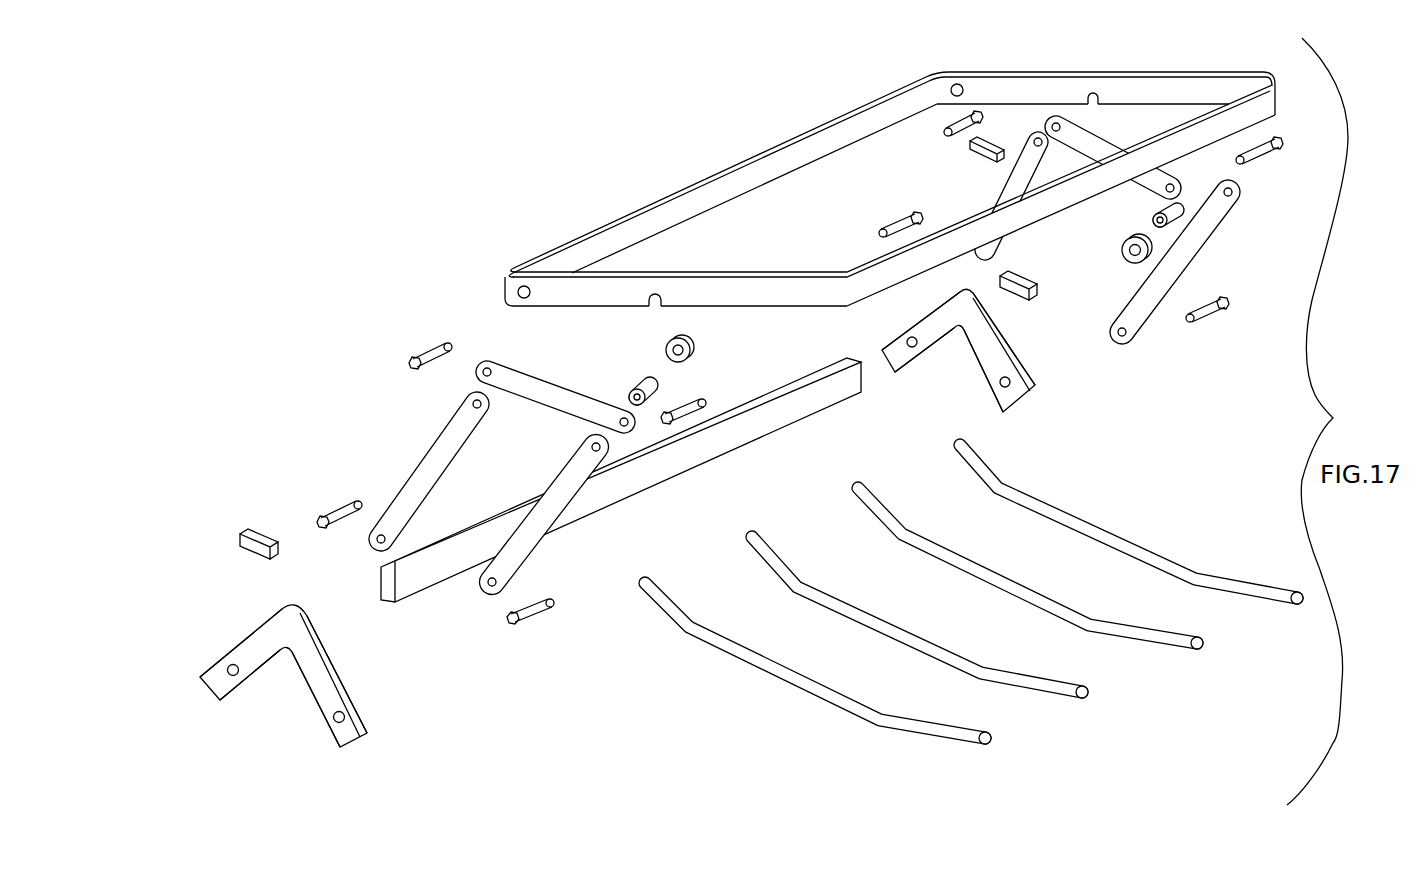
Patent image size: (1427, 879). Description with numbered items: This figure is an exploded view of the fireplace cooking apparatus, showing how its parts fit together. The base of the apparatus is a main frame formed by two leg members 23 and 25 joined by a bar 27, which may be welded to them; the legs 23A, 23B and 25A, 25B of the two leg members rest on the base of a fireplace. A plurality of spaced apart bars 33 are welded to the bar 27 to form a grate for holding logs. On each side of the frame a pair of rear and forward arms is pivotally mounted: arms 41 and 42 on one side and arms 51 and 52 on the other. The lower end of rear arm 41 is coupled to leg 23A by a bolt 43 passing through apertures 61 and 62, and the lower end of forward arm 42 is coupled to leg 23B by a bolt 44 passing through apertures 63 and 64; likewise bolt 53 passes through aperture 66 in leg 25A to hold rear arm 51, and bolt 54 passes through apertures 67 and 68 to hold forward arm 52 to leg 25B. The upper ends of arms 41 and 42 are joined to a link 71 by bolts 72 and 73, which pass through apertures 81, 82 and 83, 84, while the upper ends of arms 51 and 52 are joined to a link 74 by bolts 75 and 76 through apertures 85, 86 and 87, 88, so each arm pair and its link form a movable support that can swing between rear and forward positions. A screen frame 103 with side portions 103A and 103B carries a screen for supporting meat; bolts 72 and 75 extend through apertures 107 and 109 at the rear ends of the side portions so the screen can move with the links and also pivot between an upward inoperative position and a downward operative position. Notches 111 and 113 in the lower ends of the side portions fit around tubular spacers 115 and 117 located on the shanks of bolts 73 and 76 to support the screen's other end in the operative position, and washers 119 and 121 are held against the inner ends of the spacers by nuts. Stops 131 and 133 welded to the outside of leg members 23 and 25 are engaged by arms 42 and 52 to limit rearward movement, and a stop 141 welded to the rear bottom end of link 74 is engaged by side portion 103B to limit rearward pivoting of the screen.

The leg member 23 is at (298, 606).
The leg 23A is at (258, 627).
The leg 23B is at (348, 676).
The leg member 25 is at (1008, 307).
The leg 25A is at (915, 362).
The leg 25B is at (1038, 382).
The bar 27 is at (745, 446).
The bars 33 is at (1030, 500).
The rear arm 41 is at (432, 441).
The forward arm 42 is at (563, 477).
The bolt 43 is at (348, 502).
The bolt 44 is at (544, 593).
The rear arm 51 is at (995, 196).
The forward arm 52 is at (1215, 240).
The bolt 53 is at (887, 226).
The bolt 54 is at (1212, 310).
The aperture 61 is at (372, 540).
The aperture 62 is at (235, 677).
The aperture 63 is at (485, 590).
The aperture 64 is at (335, 723).
The aperture 66 is at (906, 338).
The aperture 67 is at (1128, 337).
The aperture 68 is at (1000, 387).
The link 71 is at (528, 375).
The bolt 72 is at (430, 340).
The bolt 73 is at (705, 400).
The link 74 is at (1078, 152).
The bolt 75 is at (946, 136).
The bolt 76 is at (1278, 158).
The aperture 81 is at (466, 403).
The aperture 82 is at (489, 366).
The aperture 83 is at (585, 446).
The aperture 84 is at (626, 430).
The aperture 85 is at (1057, 118).
The aperture 86 is at (1034, 138).
The aperture 87 is at (1239, 195).
The aperture 88 is at (1178, 184).
The screen frame 103 is at (722, 163).
The side portion 103A is at (690, 292).
The side portion 103B is at (1172, 88).
The aperture 107 is at (517, 292).
The aperture 109 is at (953, 84).
The notch 111 is at (651, 306).
The notch 113 is at (1098, 93).
The tubular spacer 115 is at (635, 385).
The tubular spacer 117 is at (1150, 220).
The washer 119 is at (691, 350).
The washer 121 is at (1120, 250).
The stop 131 is at (255, 528).
The stop 133 is at (1040, 282).
The stop 141 is at (970, 154).